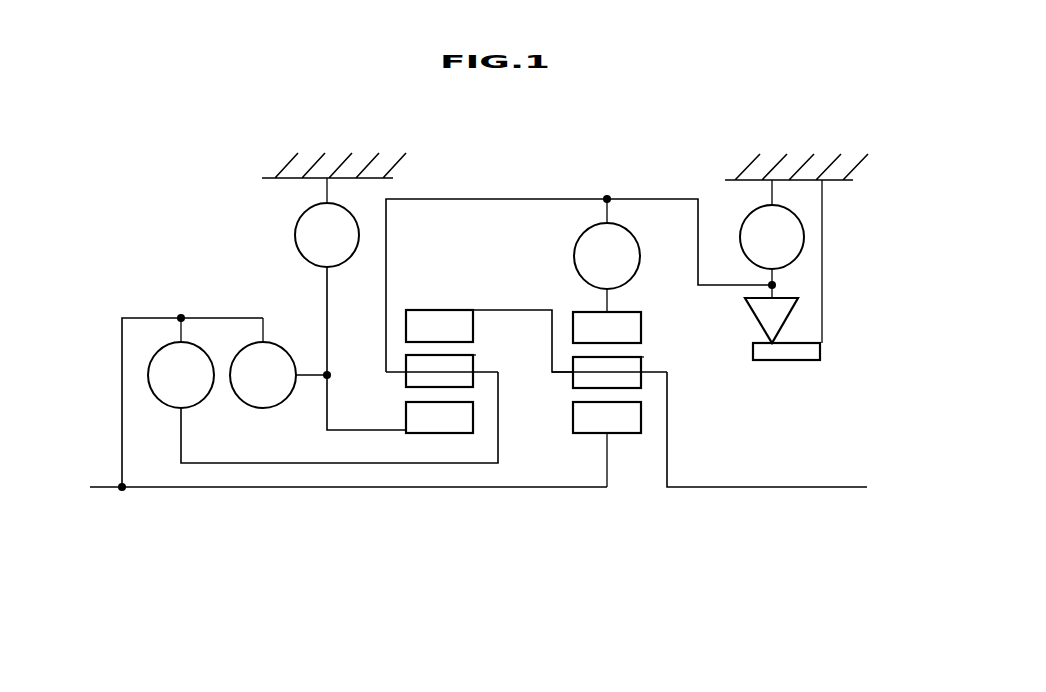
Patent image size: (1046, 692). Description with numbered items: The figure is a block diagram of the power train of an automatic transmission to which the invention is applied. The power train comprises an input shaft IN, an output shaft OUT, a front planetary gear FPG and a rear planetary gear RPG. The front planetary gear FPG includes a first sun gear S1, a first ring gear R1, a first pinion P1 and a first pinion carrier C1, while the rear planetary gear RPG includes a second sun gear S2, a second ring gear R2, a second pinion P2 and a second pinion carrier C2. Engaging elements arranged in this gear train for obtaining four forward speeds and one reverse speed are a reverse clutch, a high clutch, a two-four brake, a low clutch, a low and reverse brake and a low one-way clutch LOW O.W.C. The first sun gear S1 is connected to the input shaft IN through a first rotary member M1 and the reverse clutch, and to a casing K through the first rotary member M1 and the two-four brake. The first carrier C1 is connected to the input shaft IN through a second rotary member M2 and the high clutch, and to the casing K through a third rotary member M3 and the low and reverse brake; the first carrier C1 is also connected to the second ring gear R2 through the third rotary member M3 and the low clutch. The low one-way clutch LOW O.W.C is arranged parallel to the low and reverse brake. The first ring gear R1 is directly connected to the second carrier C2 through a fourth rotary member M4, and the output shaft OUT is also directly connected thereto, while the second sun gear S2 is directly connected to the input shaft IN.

The casing K is at (376, 179).
The low one-way clutch LOW O.W.C is at (815, 272).
The first rotary member M1 is at (351, 349).
The second rotary member M2 is at (339, 417).
The third rotary member M3 is at (581, 283).
The fourth rotary member M4 is at (523, 330).
The first ring gear R1 is at (439, 326).
The first pinion P1 is at (476, 357).
The first pinion carrier C1 is at (497, 371).
The first sun gear S1 is at (439, 417).
The second ring gear R2 is at (607, 327).
The second pinion P2 is at (644, 357).
The second pinion carrier C2 is at (667, 370).
The second sun gear S2 is at (607, 444).
The input shaft IN is at (348, 402).
The output shaft OUT is at (767, 429).
The front planetary gear FPG is at (439, 493).
The rear planetary gear RPG is at (606, 493).